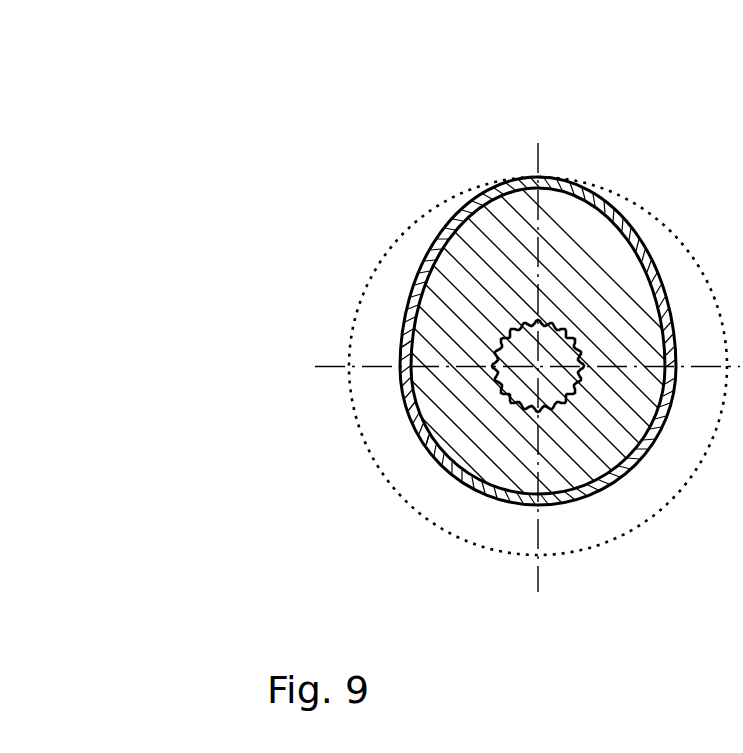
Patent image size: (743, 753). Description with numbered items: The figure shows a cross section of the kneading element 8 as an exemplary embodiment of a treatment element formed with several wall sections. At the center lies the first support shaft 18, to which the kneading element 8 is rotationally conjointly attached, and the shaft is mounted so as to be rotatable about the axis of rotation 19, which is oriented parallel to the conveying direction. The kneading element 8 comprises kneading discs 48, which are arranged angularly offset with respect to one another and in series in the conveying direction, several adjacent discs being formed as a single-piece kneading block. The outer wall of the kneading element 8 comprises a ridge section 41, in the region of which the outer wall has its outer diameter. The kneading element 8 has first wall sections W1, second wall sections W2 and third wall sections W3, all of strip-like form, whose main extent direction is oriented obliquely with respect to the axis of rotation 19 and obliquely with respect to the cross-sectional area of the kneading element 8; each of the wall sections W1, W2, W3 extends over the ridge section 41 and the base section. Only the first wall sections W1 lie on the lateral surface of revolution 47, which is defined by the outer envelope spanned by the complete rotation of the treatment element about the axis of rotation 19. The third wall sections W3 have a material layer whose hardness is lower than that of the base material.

The kneading element 8 is at (436, 190).
The kneading disc 48 is at (508, 178).
The ridge section 41 is at (547, 183).
The lateral surface of revolution 47 is at (645, 210).
The first support shaft 18 is at (542, 383).
The axis of rotation 19 is at (536, 366).
The first wall section W1 is at (432, 455).
The second wall section W2 is at (420, 437).
The third wall section W3 is at (408, 417).